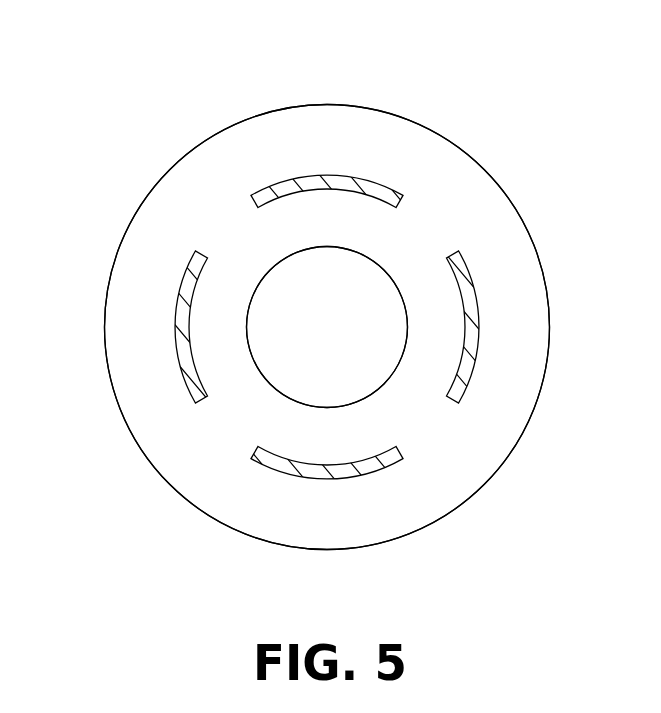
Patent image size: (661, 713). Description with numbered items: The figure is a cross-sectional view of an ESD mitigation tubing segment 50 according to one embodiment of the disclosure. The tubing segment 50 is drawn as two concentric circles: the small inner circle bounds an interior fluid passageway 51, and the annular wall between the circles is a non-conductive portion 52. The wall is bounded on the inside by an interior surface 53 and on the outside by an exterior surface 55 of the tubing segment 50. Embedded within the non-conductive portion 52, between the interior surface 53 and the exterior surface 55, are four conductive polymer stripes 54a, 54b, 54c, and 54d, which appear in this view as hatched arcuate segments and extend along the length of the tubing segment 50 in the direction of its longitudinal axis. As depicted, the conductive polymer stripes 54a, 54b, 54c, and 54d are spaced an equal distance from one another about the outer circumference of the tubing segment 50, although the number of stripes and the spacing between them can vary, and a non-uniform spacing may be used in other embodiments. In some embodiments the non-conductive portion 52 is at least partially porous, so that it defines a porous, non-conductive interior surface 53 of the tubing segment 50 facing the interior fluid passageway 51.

The ESD mitigation tubing segment 50 is at (342, 310).
The interior fluid passageway 51 is at (277, 362).
The non-conductive portion 52 is at (410, 258).
The interior surface 53 is at (367, 389).
The conductive polymer stripe 54a is at (340, 181).
The conductive polymer stripe 54b is at (475, 317).
The conductive polymer stripe 54c is at (328, 477).
The conductive polymer stripe 54d is at (182, 314).
The exterior surface 55 is at (445, 518).